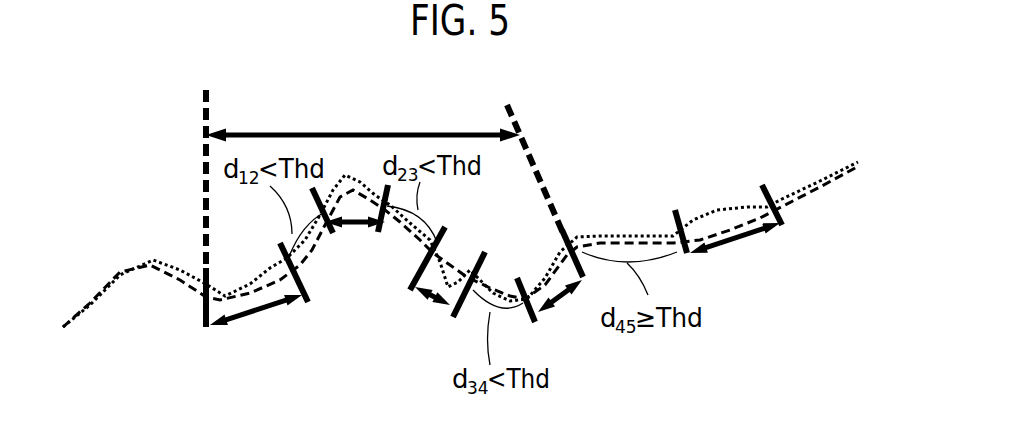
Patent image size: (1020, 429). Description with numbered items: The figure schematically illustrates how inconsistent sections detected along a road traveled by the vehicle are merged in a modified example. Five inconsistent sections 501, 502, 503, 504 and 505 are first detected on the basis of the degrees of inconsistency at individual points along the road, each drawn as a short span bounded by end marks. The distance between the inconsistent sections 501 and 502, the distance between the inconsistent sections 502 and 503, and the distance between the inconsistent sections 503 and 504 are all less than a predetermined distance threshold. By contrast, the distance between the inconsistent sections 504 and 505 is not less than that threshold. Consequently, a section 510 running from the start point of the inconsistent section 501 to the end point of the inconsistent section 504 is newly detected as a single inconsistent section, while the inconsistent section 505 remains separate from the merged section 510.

The inconsistent section 501 is at (267, 310).
The inconsistent section 502 is at (352, 226).
The inconsistent section 503 is at (425, 308).
The inconsistent section 504 is at (568, 297).
The inconsistent section 505 is at (738, 247).
The section 510 is at (384, 208).